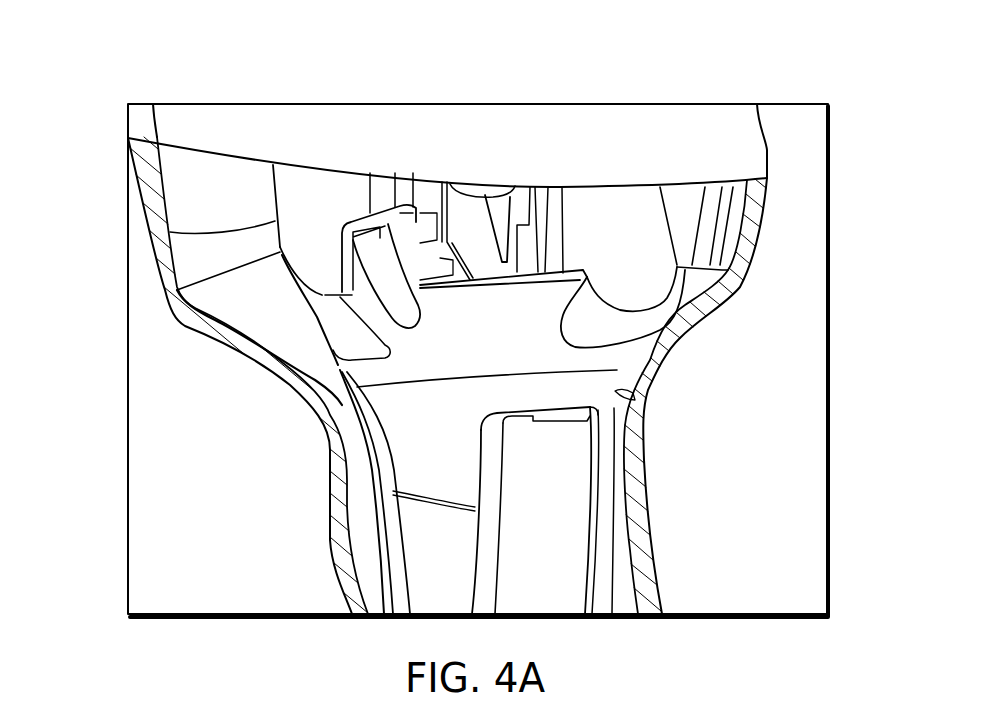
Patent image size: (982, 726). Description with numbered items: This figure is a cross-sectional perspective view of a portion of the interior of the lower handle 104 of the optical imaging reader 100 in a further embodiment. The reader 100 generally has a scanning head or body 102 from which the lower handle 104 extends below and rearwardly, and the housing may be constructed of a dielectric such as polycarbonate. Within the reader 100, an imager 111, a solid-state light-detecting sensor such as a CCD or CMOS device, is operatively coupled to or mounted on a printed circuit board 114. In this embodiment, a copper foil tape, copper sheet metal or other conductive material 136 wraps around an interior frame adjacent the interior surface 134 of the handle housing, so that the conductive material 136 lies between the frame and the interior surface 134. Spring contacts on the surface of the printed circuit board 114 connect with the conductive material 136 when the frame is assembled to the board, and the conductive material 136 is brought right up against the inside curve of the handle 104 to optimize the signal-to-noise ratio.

The optical imaging reader 100 is at (100, 75).
The scanning head or body 102 is at (738, 292).
The lower handle 104 is at (658, 571).
The imager 111 is at (507, 210).
The printed circuit board 114 is at (560, 490).
The interior surface 134 is at (633, 393).
The conductive material 136 is at (397, 417).